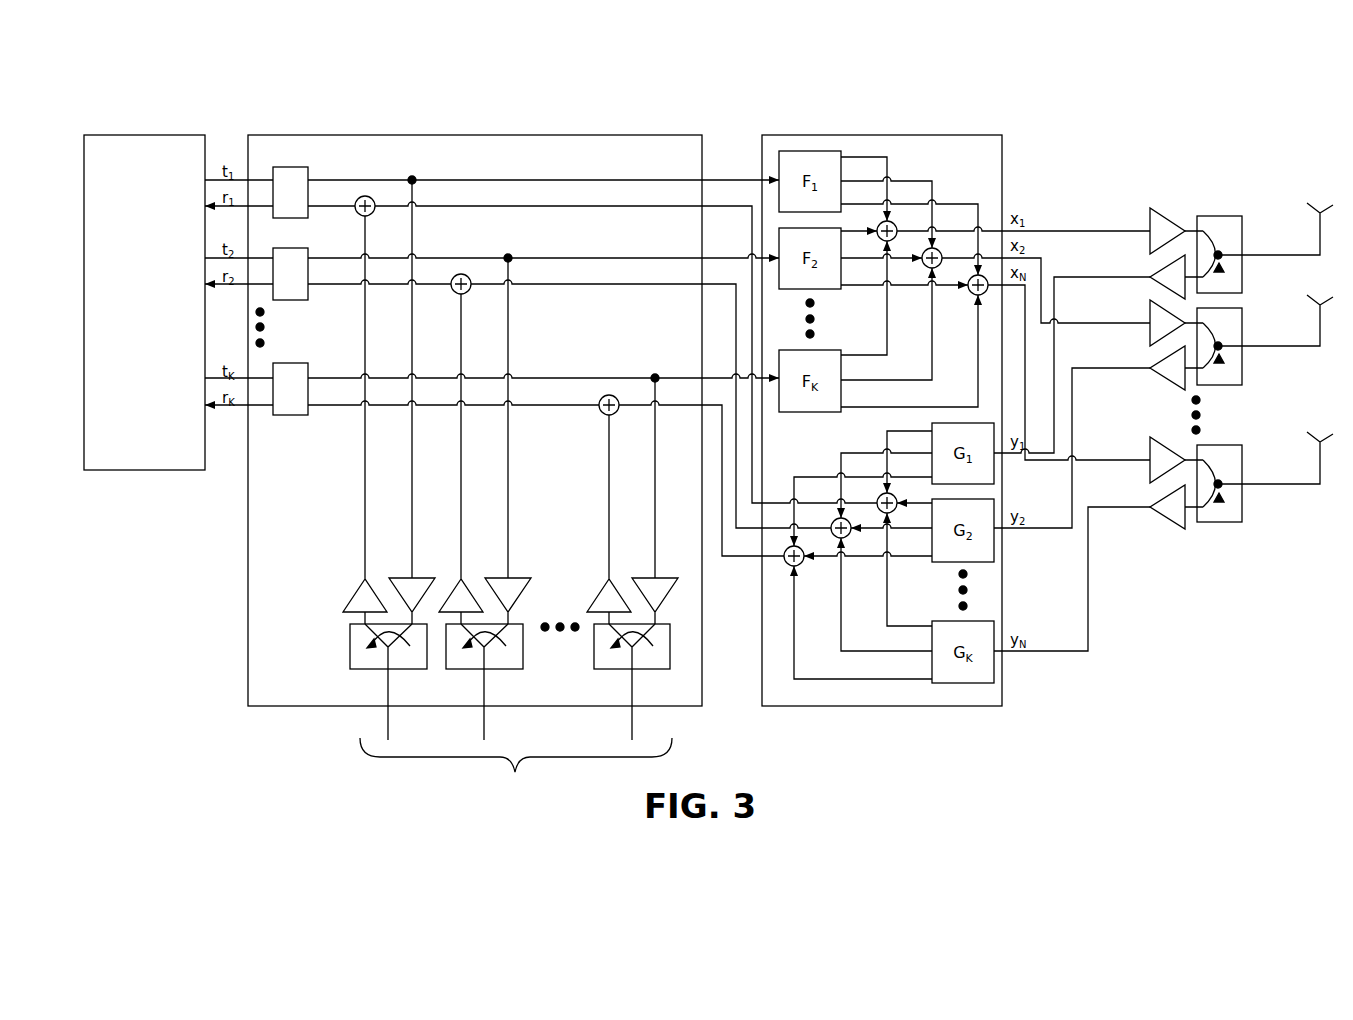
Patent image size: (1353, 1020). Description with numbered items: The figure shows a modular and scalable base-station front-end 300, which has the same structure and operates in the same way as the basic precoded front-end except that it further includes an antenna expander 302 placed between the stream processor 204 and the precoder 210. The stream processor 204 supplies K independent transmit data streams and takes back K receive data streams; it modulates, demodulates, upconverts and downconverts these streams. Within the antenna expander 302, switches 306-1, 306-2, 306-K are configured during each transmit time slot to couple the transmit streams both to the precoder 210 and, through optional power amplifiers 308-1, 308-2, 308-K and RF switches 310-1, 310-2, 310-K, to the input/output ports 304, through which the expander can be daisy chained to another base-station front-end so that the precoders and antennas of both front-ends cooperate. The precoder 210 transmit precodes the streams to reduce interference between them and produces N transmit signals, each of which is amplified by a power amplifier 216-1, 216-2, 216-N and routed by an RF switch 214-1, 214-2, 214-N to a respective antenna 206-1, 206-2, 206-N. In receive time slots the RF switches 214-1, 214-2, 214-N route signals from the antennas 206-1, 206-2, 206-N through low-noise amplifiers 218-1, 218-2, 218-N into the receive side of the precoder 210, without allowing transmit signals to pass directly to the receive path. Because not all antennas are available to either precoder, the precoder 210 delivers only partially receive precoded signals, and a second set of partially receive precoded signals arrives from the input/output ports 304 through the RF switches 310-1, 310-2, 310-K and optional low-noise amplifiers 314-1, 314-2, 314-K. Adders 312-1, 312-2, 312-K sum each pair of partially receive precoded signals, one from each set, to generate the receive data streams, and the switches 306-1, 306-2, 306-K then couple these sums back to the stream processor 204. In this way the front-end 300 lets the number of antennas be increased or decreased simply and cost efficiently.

The stream processor 204 is at (144, 302).
The antenna expander 302 is at (470, 135).
The precoder 210 is at (880, 135).
The input/output ports 304 is at (516, 769).
The switch 306-1 is at (296, 170).
The switch 306-2 is at (296, 251).
The switch 306-K is at (296, 365).
The adder 312-1 is at (408, 172).
The adder 312-2 is at (467, 275).
The adder 312-K is at (615, 396).
The low-noise amplifier 314-1 is at (356, 588).
The low-noise amplifier 314-2 is at (452, 588).
The low-noise amplifier 314-K is at (600, 588).
The power amplifier 308-1 is at (405, 590).
The power amplifier 308-2 is at (501, 590).
The power amplifier 308-K is at (648, 590).
The RF switch 310-1 is at (358, 668).
The RF switch 310-2 is at (507, 668).
The RF switch 310-K is at (655, 668).
The power amplifier 216-1 is at (1152, 226).
The power amplifier 216-2 is at (1152, 319).
The power amplifier 216-N is at (1152, 456).
The low-noise amplifier 218-1 is at (1160, 270).
The low-noise amplifier 218-2 is at (1160, 363).
The low-noise amplifier 218-N is at (1160, 500).
The RF switch 214-1 is at (1244, 222).
The RF switch 214-2 is at (1244, 314).
The RF switch 214-N is at (1244, 451).
The antenna 206-1 is at (1313, 210).
The antenna 206-2 is at (1313, 302).
The antenna 206-N is at (1313, 438).
The BS front-end 300 is at (1152, 740).